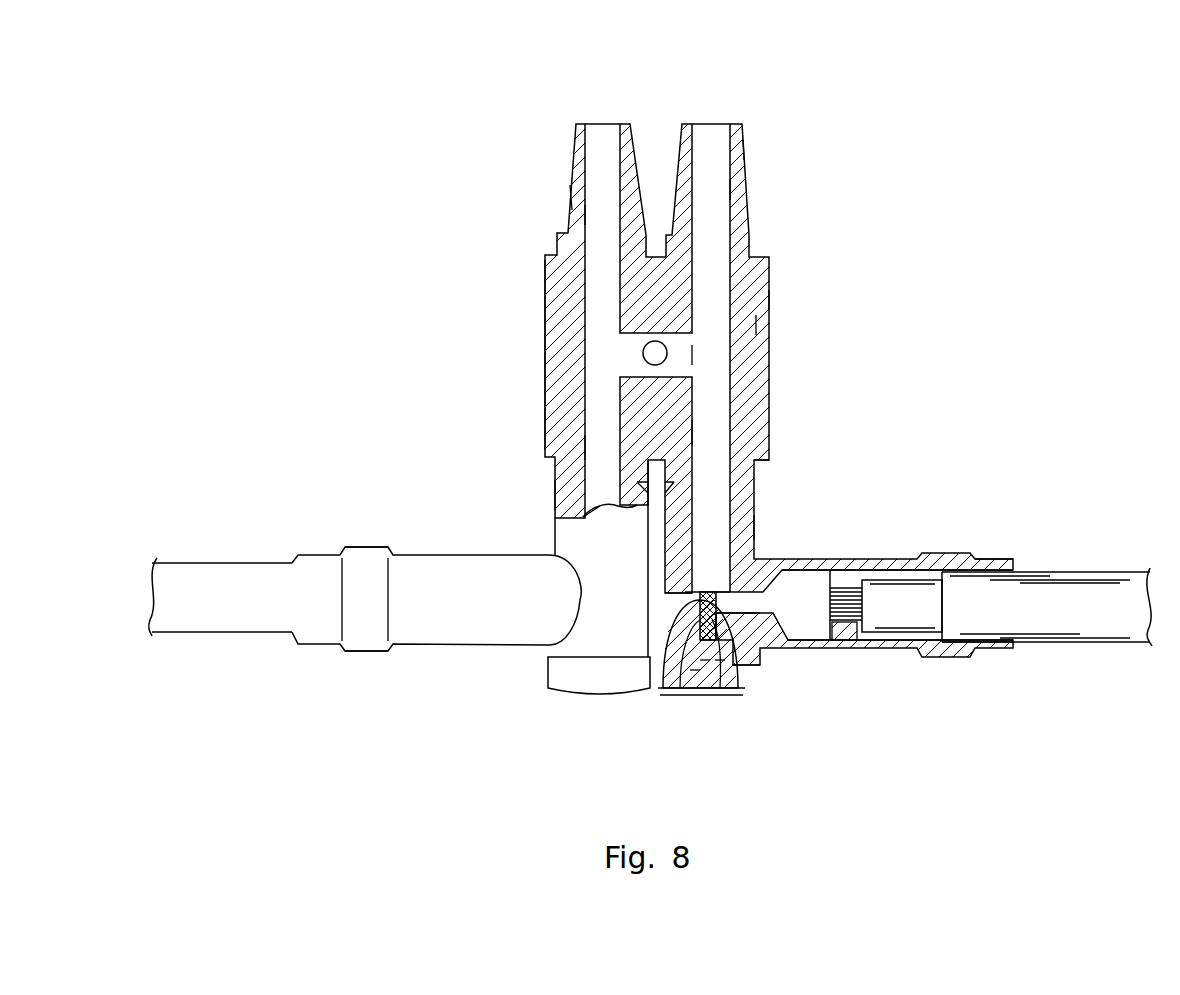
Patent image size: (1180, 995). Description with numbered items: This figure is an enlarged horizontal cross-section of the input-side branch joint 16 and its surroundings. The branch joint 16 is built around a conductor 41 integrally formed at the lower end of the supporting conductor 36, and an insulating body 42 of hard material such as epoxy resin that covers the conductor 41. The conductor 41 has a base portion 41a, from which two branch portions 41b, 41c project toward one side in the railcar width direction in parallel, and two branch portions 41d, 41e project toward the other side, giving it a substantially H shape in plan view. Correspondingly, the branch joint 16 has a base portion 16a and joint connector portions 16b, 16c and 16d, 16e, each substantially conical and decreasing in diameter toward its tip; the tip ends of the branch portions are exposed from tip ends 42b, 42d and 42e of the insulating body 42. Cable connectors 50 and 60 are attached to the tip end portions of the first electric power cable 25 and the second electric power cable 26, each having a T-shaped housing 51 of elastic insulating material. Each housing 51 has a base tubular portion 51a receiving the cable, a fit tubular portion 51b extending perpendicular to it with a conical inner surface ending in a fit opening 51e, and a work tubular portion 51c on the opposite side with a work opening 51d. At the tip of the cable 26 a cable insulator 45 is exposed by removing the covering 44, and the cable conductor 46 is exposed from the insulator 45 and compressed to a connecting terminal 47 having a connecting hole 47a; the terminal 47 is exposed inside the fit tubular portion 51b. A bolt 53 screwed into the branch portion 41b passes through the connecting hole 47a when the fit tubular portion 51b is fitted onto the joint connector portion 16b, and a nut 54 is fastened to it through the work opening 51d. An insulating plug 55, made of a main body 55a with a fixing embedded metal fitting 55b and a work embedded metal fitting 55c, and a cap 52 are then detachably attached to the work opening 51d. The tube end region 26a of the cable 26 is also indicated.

The input-side branch joint 16 is at (530, 365).
The base portion 16a is at (758, 300).
The joint connector portion 16b is at (758, 525).
The joint connector portion 16c is at (562, 493).
The joint connector portion 16d is at (572, 197).
The joint connector portion 16e is at (745, 148).
The first electric power cable 25 is at (205, 563).
The second electric power cable 26 is at (1105, 572).
The right tube end 26a is at (987, 570).
The supporting conductor 36 is at (638, 352).
The conductor 41 is at (718, 285).
The base portion 41a is at (690, 354).
The branch portion 41b is at (718, 432).
The branch portion 41c is at (578, 447).
The branch portion 41d is at (593, 215).
The branch portion 41e is at (718, 190).
The insulating body 42 is at (757, 323).
The tip end of insulating body 42b is at (718, 590).
The tip end of insulating body 42d is at (606, 124).
The tip end of insulating body 42e is at (714, 124).
The covering 44 is at (1065, 638).
The cable insulator 45 is at (920, 630).
The cable conductor 46 is at (848, 622).
The connecting terminal 47 is at (767, 613).
The connecting hole 47a is at (688, 672).
The cable connector 50 is at (470, 650).
The housing 51 is at (410, 651).
The base tubular portion 51a is at (362, 651).
The fit tubular portion 51b is at (562, 535).
The work tubular portion 51c is at (668, 625).
The work opening 51d is at (693, 690).
The fit opening 51e is at (756, 430).
The cap 52 is at (550, 670).
The bolt 53 is at (700, 690).
The nut 54 is at (735, 690).
The insulating plug 55 is at (725, 695).
The insulating plug main body 55a is at (720, 698).
The fixing embedded metal fitting 55b is at (705, 698).
The work embedded metal fitting 55c is at (700, 695).
The cable connector 60 is at (818, 660).